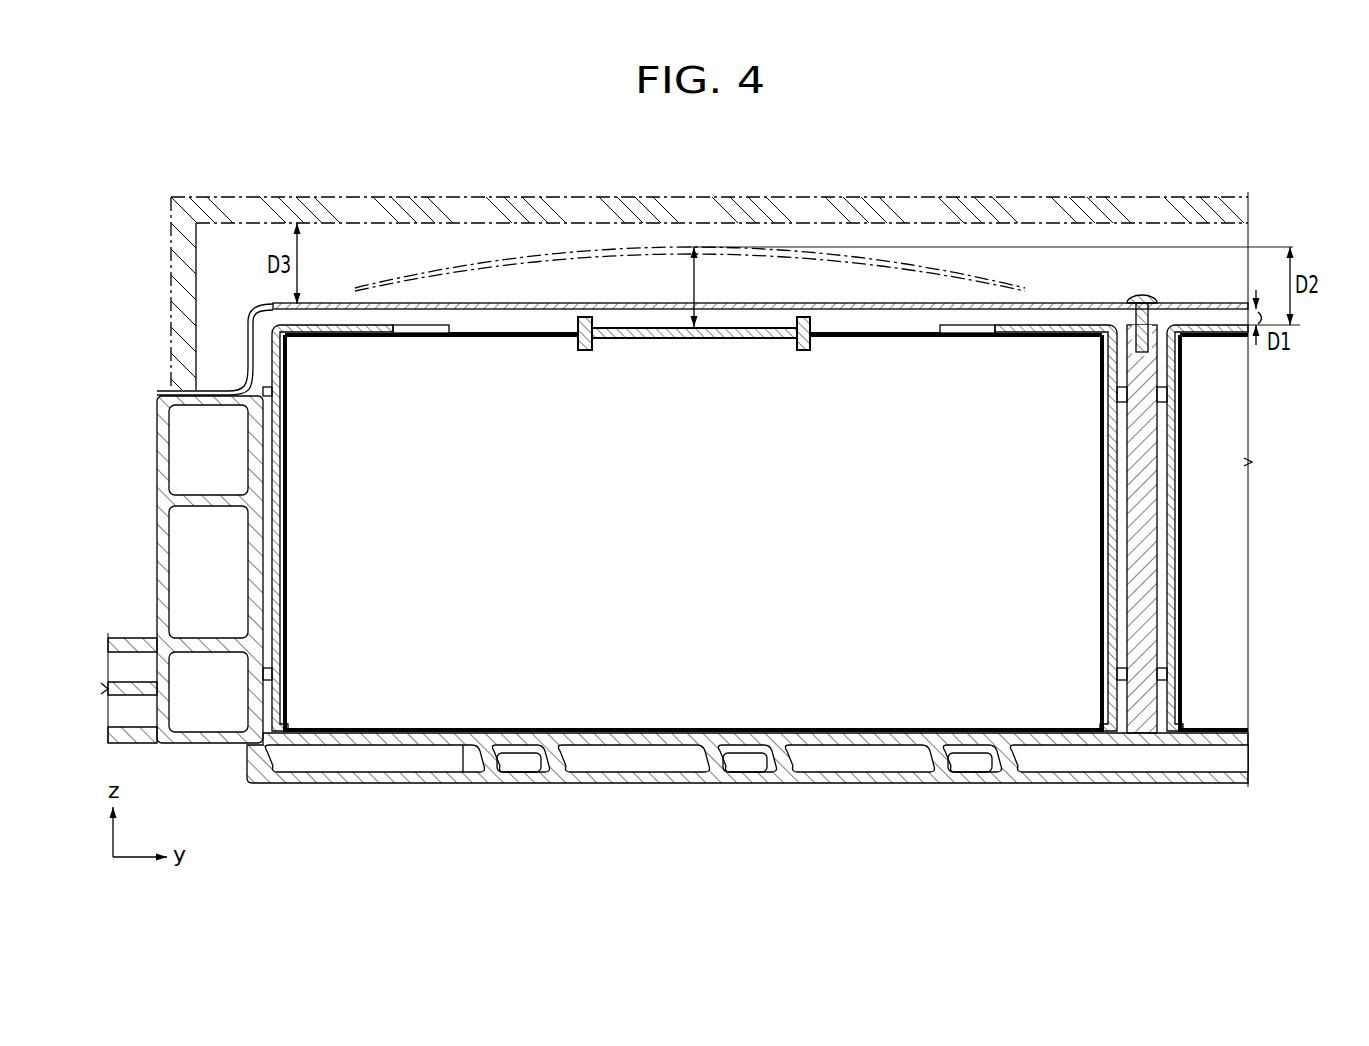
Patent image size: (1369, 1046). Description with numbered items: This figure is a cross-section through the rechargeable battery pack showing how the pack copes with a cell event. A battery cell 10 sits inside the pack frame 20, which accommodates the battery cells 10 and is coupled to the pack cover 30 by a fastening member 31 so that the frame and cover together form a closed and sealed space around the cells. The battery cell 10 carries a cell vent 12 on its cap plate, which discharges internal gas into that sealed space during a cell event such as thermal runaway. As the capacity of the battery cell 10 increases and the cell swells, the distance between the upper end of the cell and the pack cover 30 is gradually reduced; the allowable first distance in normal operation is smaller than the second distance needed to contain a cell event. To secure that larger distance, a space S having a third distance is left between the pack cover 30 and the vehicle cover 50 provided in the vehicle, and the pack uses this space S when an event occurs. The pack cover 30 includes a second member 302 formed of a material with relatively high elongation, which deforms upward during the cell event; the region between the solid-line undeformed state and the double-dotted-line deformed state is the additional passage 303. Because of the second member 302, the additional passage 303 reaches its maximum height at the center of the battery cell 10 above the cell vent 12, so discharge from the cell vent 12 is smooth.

The battery cell 10 is at (692, 539).
The cell vent 12 is at (690, 339).
The pack frame 20 is at (160, 444).
The pack cover 30 is at (702, 264).
The second member 302 is at (777, 303).
The additional passage 303 is at (845, 277).
The fastening member 31 is at (1143, 295).
The vehicle cover 50 is at (427, 215).
The space S is at (221, 257).